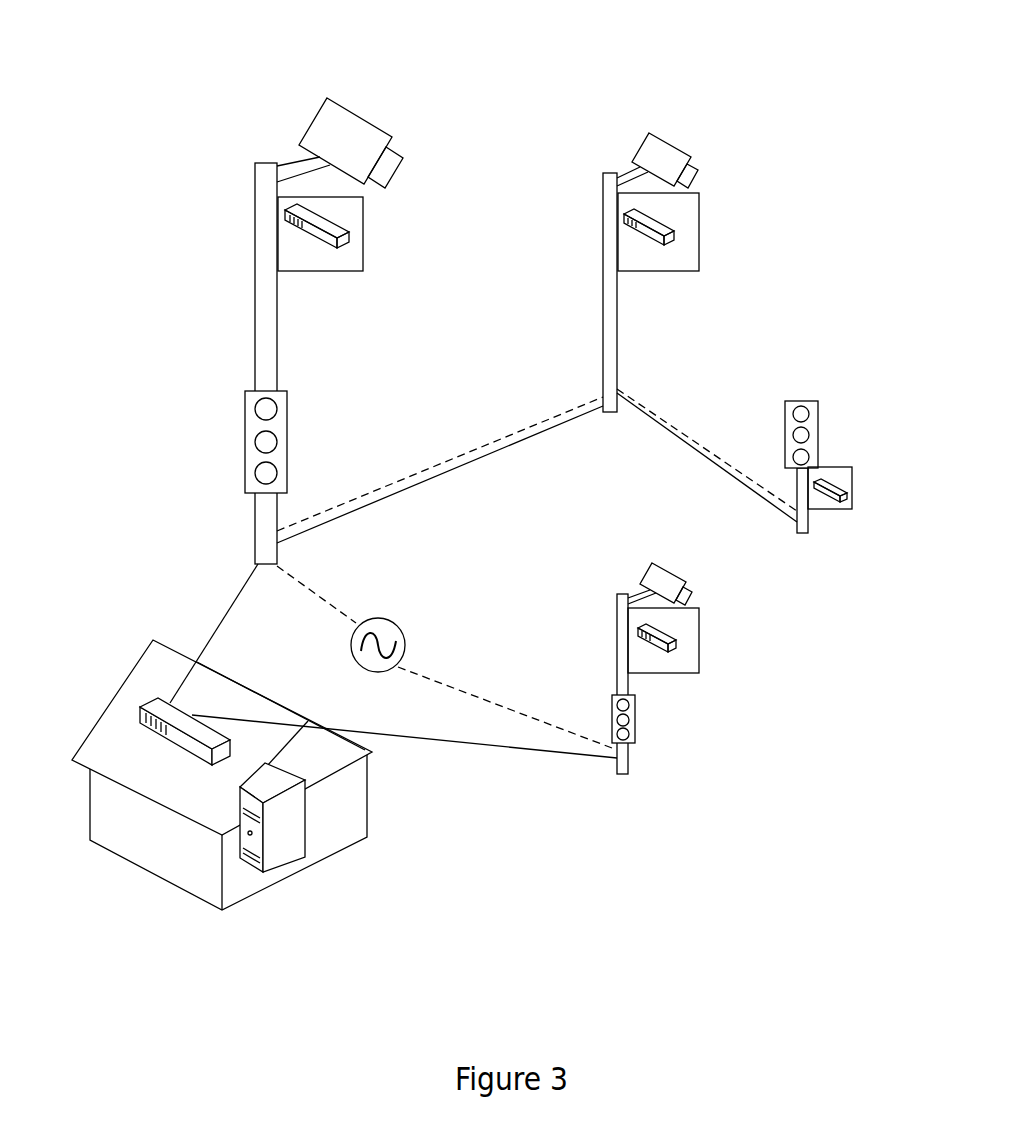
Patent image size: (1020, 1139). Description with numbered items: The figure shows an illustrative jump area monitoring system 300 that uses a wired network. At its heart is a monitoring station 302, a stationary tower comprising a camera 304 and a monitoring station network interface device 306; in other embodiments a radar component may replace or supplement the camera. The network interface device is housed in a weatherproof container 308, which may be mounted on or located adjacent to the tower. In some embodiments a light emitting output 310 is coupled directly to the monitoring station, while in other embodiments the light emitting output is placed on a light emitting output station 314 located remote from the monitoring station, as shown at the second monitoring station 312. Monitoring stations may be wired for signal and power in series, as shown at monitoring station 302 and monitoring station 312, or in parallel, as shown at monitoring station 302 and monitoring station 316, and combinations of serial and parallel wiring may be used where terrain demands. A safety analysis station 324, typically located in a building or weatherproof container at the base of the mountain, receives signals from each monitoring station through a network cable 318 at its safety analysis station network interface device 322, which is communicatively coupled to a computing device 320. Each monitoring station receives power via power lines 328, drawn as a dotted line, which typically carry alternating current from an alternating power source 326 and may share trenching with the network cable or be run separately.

The jump area monitoring system 300 is at (156, 60).
The monitoring station 302 is at (255, 227).
The camera 304 is at (377, 112).
The monitoring station network interface device 306 is at (347, 232).
The weatherproof container 308 is at (363, 271).
The light emitting output 310 is at (245, 410).
The monitoring station (remote light emitting output arrangement) 312 is at (611, 124).
The light emitting output station 314 is at (818, 374).
The monitoring station (parallel wired) 316 is at (633, 558).
The network cable 318 is at (240, 588).
The computing device 320 is at (303, 800).
The safety analysis station network interface device 322 is at (198, 762).
The safety analysis station 324 is at (120, 686).
The alternating power source 326 is at (402, 630).
The power lines 328 is at (307, 590).